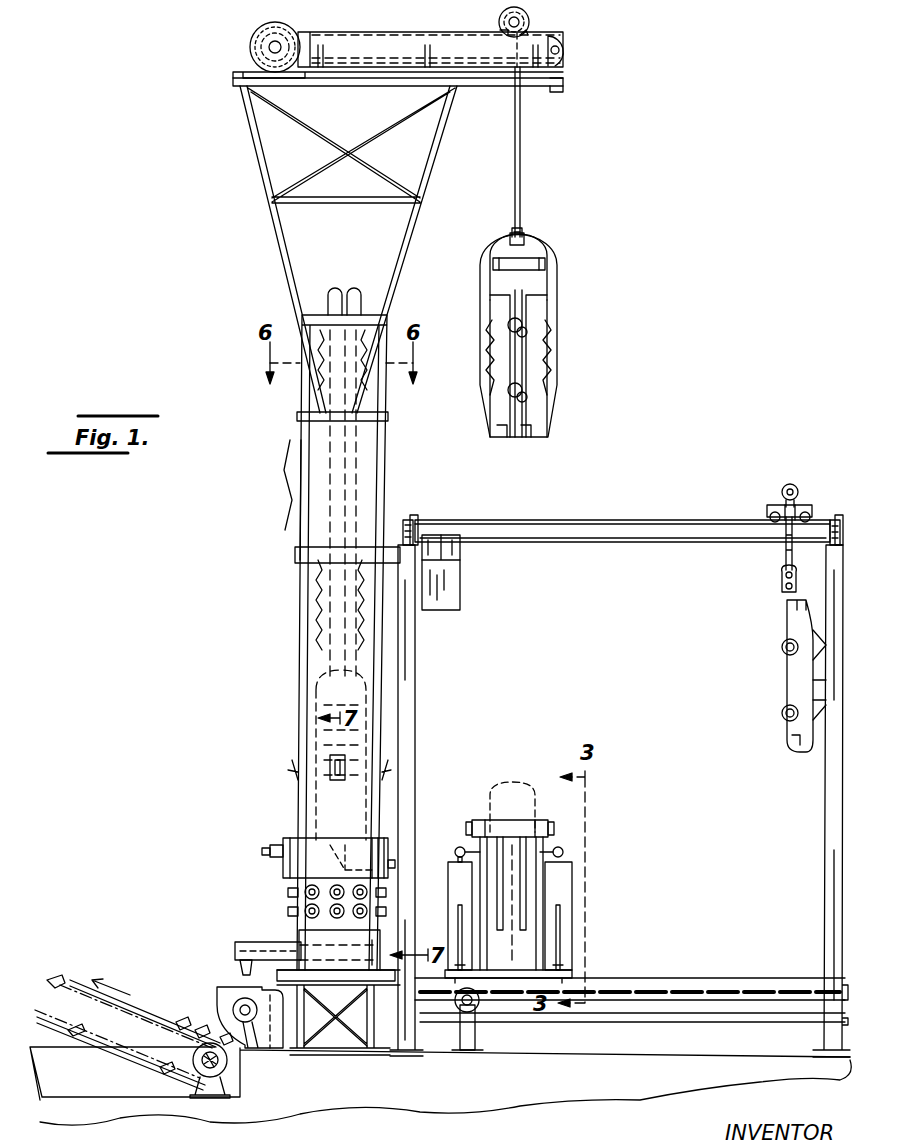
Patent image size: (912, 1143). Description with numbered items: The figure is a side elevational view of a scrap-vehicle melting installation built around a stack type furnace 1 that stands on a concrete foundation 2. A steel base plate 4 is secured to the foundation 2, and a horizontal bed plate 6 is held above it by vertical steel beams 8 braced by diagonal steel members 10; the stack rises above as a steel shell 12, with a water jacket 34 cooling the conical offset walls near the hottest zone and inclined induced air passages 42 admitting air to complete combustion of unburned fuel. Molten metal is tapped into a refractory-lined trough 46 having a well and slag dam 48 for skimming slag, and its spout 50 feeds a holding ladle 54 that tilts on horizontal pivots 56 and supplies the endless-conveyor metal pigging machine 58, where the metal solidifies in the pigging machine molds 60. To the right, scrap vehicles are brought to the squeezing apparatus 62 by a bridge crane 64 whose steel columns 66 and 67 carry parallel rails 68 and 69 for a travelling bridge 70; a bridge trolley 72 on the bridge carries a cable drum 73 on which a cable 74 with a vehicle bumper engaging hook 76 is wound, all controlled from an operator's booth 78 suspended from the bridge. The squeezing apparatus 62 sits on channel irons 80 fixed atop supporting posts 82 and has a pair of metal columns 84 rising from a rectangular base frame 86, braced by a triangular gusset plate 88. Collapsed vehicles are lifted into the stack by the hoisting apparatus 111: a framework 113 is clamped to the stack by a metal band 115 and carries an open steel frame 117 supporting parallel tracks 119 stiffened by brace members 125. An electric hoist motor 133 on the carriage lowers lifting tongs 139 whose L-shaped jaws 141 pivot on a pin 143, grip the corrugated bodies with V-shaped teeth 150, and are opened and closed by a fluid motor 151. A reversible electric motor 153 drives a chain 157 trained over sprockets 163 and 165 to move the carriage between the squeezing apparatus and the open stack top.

The stack type furnace 1 is at (288, 625).
The concrete foundation 2 is at (262, 1103).
The steel base plate 4 is at (370, 1050).
The bed plate 6 is at (342, 986).
The steel beams 8 is at (335, 1044).
The diagonal steel members 10 is at (325, 968).
The steel shell 12 is at (296, 806).
The water jacket 34 is at (286, 840).
The induced air passages 42 is at (292, 890).
The refractory-lined trough 46 is at (305, 908).
The well and slag dam 48 is at (272, 950).
The spout 50 is at (242, 950).
The holding ladle 54 is at (230, 985).
The horizontal pivots 56 is at (252, 1020).
The metal pigging machine 58 is at (122, 1066).
The pigging machine molds 60 is at (202, 1025).
The squeezing apparatus 62 is at (522, 882).
The bridge crane 64 is at (635, 518).
The steel columns 66 is at (418, 665).
The steel columns 67 is at (826, 795).
The rail 68 is at (405, 520).
The rail 69 is at (840, 518).
The travelling bridge 70 is at (655, 538).
The bridge trolley 72 is at (772, 503).
The cable drum 73 is at (788, 484).
The cable 74 is at (784, 558).
The vehicle bumper engaging hook 76 is at (785, 610).
The operator's booth 78 is at (450, 585).
The channel irons 80 is at (680, 978).
The supporting posts 82 is at (478, 1035).
The metal columns 84 is at (456, 872).
The base frame 86 is at (575, 970).
The gusset plate 88 is at (459, 915).
The hoisting apparatus 111 is at (254, 29).
The framework 113 is at (244, 126).
The metal band 115 is at (297, 413).
The open steel frame 117 is at (358, 80).
The tracks 119 is at (480, 68).
The brace members 125 is at (430, 48).
The electric hoist motor 133 is at (530, 20).
The lifting tongs 139 is at (524, 316).
The L-shaped jaws 141 is at (486, 268).
The pivot pin 143 is at (511, 232).
The V-shaped teeth 150 is at (490, 345).
The fluid motor 151 is at (545, 267).
The reversible electric motor 153 is at (288, 30).
The chain 157 is at (572, 52).
The sprocket 163 is at (252, 47).
The sprocket 165 is at (566, 46).